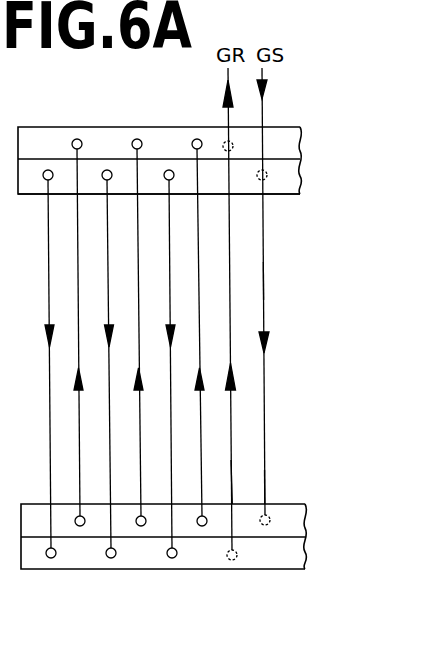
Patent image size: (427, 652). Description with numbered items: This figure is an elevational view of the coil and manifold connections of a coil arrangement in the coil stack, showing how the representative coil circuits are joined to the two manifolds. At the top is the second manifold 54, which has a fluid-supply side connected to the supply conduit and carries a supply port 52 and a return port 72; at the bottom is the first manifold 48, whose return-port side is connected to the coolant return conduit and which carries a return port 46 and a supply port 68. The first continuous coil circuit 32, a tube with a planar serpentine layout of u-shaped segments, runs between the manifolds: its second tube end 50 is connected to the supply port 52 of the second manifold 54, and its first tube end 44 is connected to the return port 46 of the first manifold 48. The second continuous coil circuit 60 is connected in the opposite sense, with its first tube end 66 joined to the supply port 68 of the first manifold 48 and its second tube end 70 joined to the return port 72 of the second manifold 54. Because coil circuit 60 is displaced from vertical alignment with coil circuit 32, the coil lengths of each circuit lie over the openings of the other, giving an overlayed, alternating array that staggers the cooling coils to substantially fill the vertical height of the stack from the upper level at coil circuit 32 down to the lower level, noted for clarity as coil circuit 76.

The first continuous coil circuit 32 is at (264, 272).
The first tube end 44 is at (266, 503).
The return port 46 is at (271, 521).
The first manifold 48 is at (290, 571).
The second tube end 50 is at (265, 196).
The supply port 52 is at (267, 179).
The second manifold 54 is at (281, 128).
The second continuous coil circuit 60 is at (232, 412).
The first tube end 66 is at (227, 563).
The supply port 68 is at (234, 503).
The second tube end 70 is at (232, 196).
The return port 72 is at (224, 142).
The coil circuit 76 is at (50, 488).